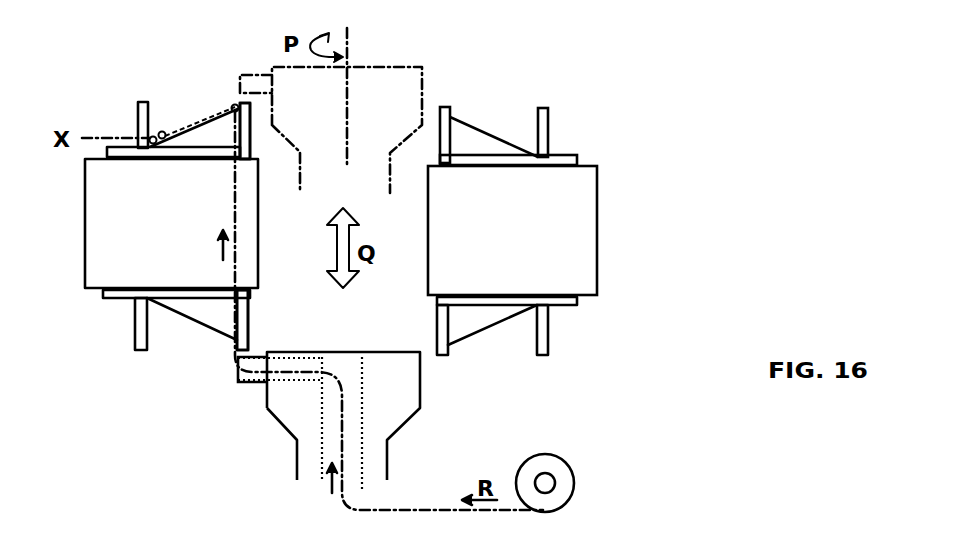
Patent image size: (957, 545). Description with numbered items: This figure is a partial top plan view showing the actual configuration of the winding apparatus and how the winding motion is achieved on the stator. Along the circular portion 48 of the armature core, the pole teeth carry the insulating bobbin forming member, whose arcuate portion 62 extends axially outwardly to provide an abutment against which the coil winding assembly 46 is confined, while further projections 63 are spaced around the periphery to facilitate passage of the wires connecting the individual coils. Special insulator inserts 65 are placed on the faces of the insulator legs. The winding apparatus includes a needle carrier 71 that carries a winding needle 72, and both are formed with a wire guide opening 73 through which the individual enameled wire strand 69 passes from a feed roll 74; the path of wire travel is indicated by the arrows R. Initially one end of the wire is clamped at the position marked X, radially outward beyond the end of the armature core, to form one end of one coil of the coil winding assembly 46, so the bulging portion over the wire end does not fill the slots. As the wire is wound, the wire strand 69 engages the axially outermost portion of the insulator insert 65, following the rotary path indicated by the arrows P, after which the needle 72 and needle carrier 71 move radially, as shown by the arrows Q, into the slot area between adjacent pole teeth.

The coil winding assembly 46 is at (591, 146).
The circular portion 48 is at (588, 197).
The arcuate portion 62 is at (241, 114).
The further projections 63 is at (553, 118).
The insulator inserts 65 is at (213, 130).
The wire strand 69 is at (164, 130).
The needle carrier 71 is at (383, 458).
The winding needle 72 is at (238, 382).
The wire guide opening 73 is at (323, 440).
The feed roll 74 is at (545, 458).